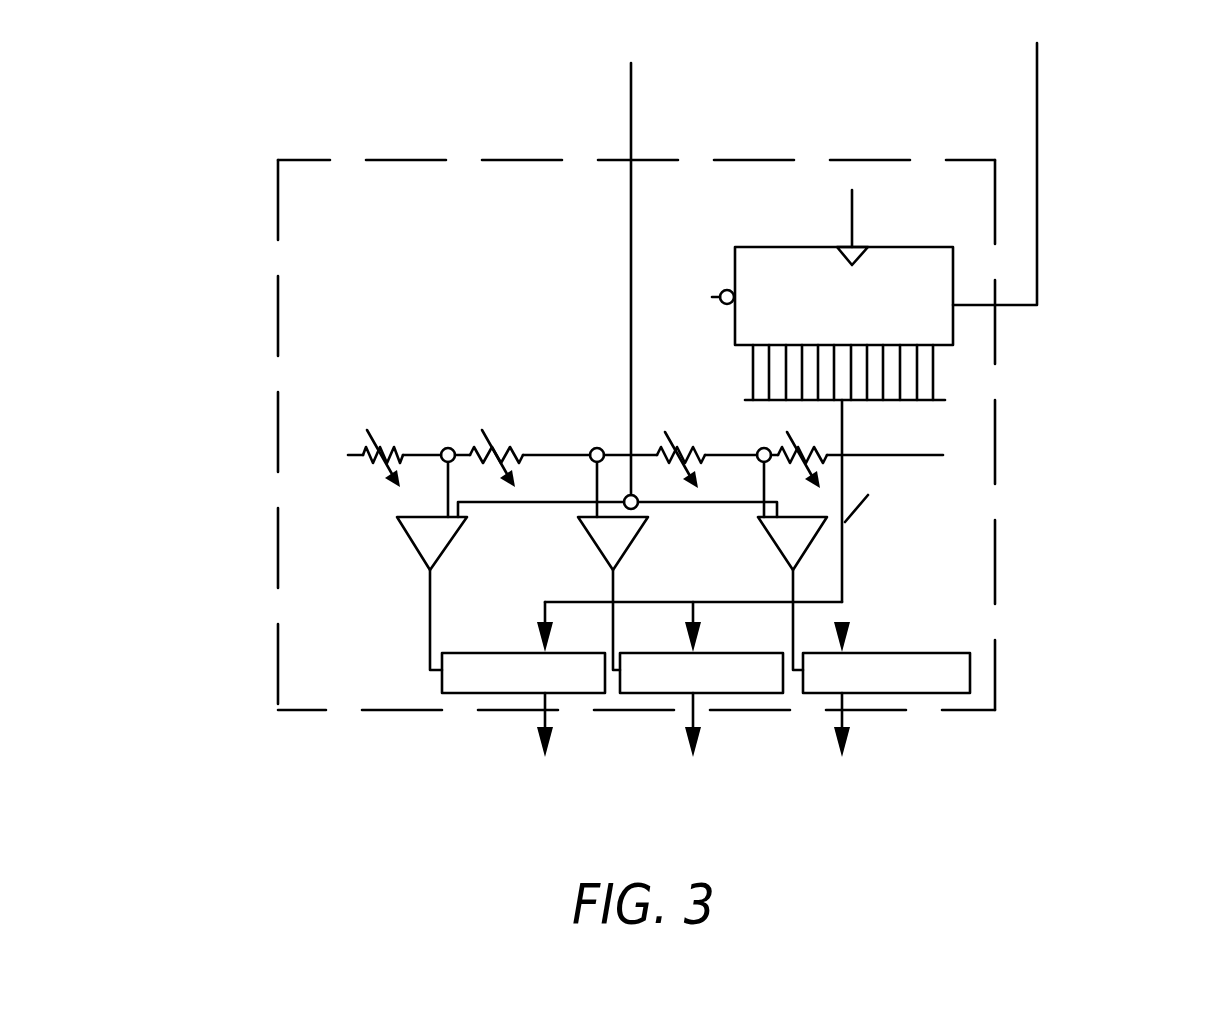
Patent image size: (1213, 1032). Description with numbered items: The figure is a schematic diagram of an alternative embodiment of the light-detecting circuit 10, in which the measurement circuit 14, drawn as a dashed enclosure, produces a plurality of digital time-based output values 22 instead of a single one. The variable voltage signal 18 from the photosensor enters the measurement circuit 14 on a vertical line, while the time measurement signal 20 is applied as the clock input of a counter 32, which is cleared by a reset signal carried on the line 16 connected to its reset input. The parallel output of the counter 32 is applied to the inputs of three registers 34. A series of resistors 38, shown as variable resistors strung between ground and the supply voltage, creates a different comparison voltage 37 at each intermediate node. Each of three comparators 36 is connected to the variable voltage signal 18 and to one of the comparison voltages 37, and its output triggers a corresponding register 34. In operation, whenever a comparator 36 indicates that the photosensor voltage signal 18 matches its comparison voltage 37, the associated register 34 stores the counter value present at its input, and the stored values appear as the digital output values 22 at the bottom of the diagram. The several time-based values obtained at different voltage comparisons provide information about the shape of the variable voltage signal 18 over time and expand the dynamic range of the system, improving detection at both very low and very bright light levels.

The circuit 10 is at (1088, 310).
The measurement circuit 14 is at (278, 228).
The reset line 16 is at (1037, 85).
The variable voltage signal 18 is at (631, 237).
The time measurement signal 20 is at (852, 210).
The output value 22 is at (848, 735).
The counter 32 is at (953, 330).
The registers 34 is at (970, 660).
The comparator 36 is at (418, 547).
The comparison voltage 37 is at (448, 445).
The resistors 38 is at (393, 450).